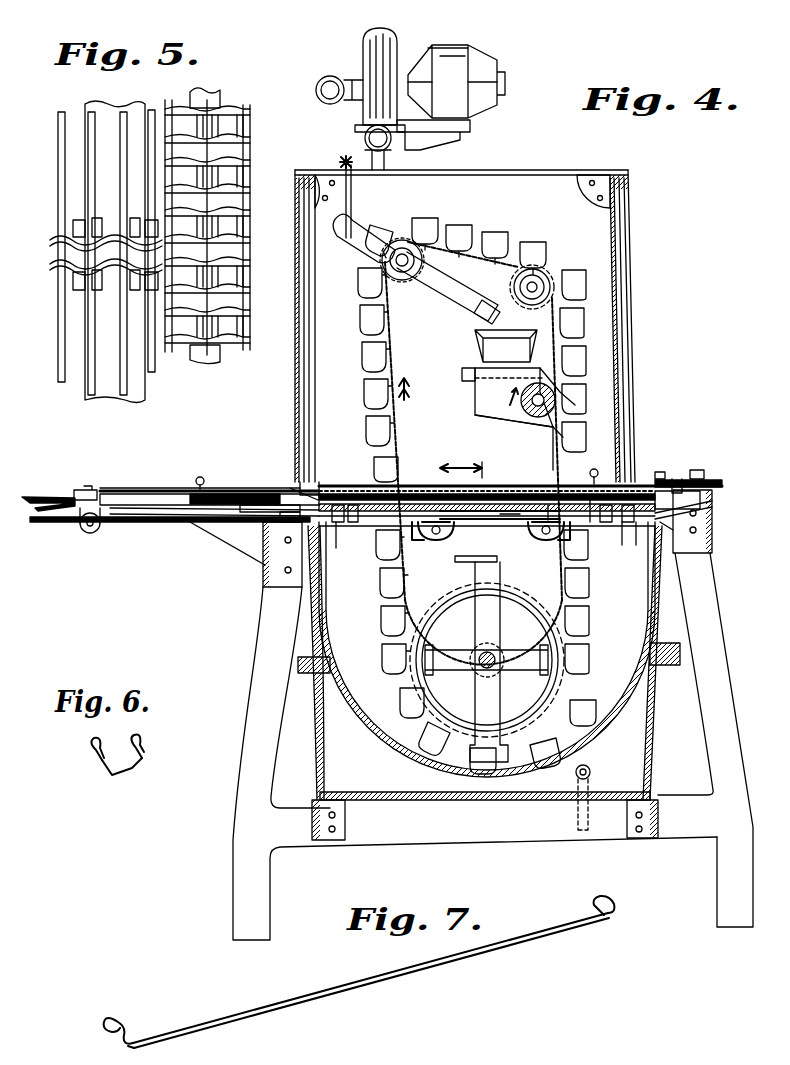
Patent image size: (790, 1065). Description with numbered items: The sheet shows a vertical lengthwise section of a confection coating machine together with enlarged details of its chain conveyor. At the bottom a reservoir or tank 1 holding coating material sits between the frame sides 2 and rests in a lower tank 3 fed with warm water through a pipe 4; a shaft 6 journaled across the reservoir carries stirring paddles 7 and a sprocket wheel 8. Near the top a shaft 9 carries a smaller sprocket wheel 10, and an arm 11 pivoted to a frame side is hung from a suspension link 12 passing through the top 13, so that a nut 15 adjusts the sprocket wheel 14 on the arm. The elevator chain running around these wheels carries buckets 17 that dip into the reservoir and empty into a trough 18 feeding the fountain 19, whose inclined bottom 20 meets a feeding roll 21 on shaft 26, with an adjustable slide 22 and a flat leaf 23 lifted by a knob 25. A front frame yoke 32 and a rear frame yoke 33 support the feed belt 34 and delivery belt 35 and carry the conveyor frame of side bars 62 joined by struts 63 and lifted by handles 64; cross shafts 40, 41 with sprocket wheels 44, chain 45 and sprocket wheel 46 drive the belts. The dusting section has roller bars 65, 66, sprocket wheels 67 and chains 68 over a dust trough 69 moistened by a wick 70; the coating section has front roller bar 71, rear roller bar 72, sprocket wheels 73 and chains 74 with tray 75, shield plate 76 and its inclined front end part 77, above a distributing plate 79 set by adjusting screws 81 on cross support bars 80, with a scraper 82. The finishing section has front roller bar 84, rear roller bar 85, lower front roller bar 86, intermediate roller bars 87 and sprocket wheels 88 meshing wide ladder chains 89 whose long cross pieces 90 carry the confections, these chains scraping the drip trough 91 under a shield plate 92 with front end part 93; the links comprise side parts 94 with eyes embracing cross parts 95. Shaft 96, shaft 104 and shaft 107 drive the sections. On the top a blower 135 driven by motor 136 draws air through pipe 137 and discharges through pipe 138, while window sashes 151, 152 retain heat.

In FIG. 4, the reservoir or tank 1 is at (320, 608).
In FIG. 4, the frame sides 2 is at (258, 622).
In FIG. 4, the lower tank 3 is at (316, 757).
In FIG. 4, the pipe 4 is at (592, 773).
In FIG. 4, the shaft 6 is at (494, 652).
In FIG. 4, the stirring blades or paddles 7 is at (486, 562).
In FIG. 4, the sprocket wheel 8 is at (520, 606).
In FIG. 4, the shaft 9 is at (548, 280).
In FIG. 4, the sprocket wheel 10 is at (556, 287).
In FIG. 4, the arm 11 is at (440, 292).
In FIG. 4, the suspension link 12 is at (348, 228).
In FIG. 4, the top 13 is at (500, 170).
In FIG. 4, the sprocket wheel 14 is at (400, 283).
In FIG. 4, the nut 15 is at (340, 160).
In FIG. 4, the buckets 17 is at (500, 240).
In FIG. 4, the trough 18 is at (475, 348).
In FIG. 4, the fountain 19 is at (475, 392).
In FIG. 4, the bottom 20 is at (500, 426).
In FIG. 4, the feeding roll 21 is at (556, 402).
In FIG. 4, the adjustable slide 22 is at (552, 445).
In FIG. 4, the flat leaf 23 is at (562, 395).
In FIG. 4, the knob 25 is at (538, 368).
In FIG. 4, the shaft 26 is at (565, 436).
In FIG. 4, the frame yoke 32 is at (712, 503).
In FIG. 4, the frame yoke 33 is at (263, 565).
In FIG. 4, the feed belt 34 is at (722, 479).
In FIG. 4, the delivery belt 35 is at (66, 497).
In FIG. 4, the shaft 40 is at (530, 540).
In FIG. 4, the shaft 41 is at (420, 545).
In FIG. 4, the sprocket wheels 44 is at (438, 540).
In FIG. 4, the chain 45 is at (480, 556).
In FIG. 4, the sprocket wheel 46 is at (400, 448).
In FIG. 4, the side frame bars 62 is at (248, 488).
In FIG. 4, the transverse struts 63 is at (108, 516).
In FIG. 4, the eyes or handles 64 is at (595, 469).
In FIG. 4, the roller bar 65 is at (660, 470).
In FIG. 4, the roller bar 66 is at (647, 478).
In FIG. 4, the sprocket wheels 67 is at (678, 479).
In FIG. 4, the sprocket chains 68 is at (627, 523).
In FIG. 4, the trough 69 is at (622, 546).
In FIG. 4, the wick 70 is at (637, 546).
In FIG. 4, the front roller bar 71 is at (590, 524).
In FIG. 4, the rear roller bar 72 is at (342, 484).
In FIG. 5, the rear roller bar 72 is at (198, 100).
In FIG. 4, the sprocket wheels 73 is at (548, 485).
In FIG. 4, the chains 74 is at (418, 484).
In FIG. 5, the chains 74 is at (242, 108).
In FIG. 4, the trough or tray 75 is at (512, 484).
In FIG. 4, the shield plate 76 is at (360, 484).
In FIG. 4, the front end part 77 is at (490, 484).
In FIG. 4, the distributing plate 79 is at (352, 523).
In FIG. 4, the cross support bars 80 is at (338, 523).
In FIG. 4, the adjusting screws 81 is at (338, 550).
In FIG. 4, the scraper 82 is at (604, 523).
In FIG. 4, the front roller bar 84 is at (300, 484).
In FIG. 5, the front roller bar 84 is at (120, 108).
In FIG. 4, the rear roller bar 85 is at (112, 490).
In FIG. 4, the lower front roller bar 86 is at (265, 524).
In FIG. 4, the intermediate roller bars 87 is at (220, 490).
In FIG. 4, the sprocket wheels 88 is at (290, 490).
In FIG. 5, the sprocket wheels 88 is at (73, 226).
In FIG. 4, the ladder chains 89 is at (190, 490).
In FIG. 5, the cross pieces 90 is at (154, 110).
In FIG. 7, the cross pieces 90 is at (325, 997).
In FIG. 4, the drip trough 91 is at (212, 525).
In FIG. 4, the shield plate 92 is at (185, 525).
In FIG. 4, the front end part 93 is at (298, 523).
In FIG. 5, the side parts 94 is at (58, 268).
In FIG. 6, the side parts 94 is at (96, 756).
In FIG. 7, the side parts 94 is at (124, 1028).
In FIG. 5, the cross parts 95 is at (243, 126).
In FIG. 6, the cross parts 95 is at (130, 770).
In FIG. 4, the shaft 96 is at (487, 498).
In FIG. 4, the shaft 104 is at (480, 462).
In FIG. 4, the shaft 107 is at (468, 473).
In FIG. 4, the blower 135 is at (363, 40).
In FIG. 4, the motor 136 is at (470, 60).
In FIG. 4, the pipe 137 is at (330, 104).
In FIG. 4, the pipe 138 is at (400, 140).
In FIG. 4, the window sash 151 is at (632, 360).
In FIG. 4, the window sash 152 is at (295, 388).